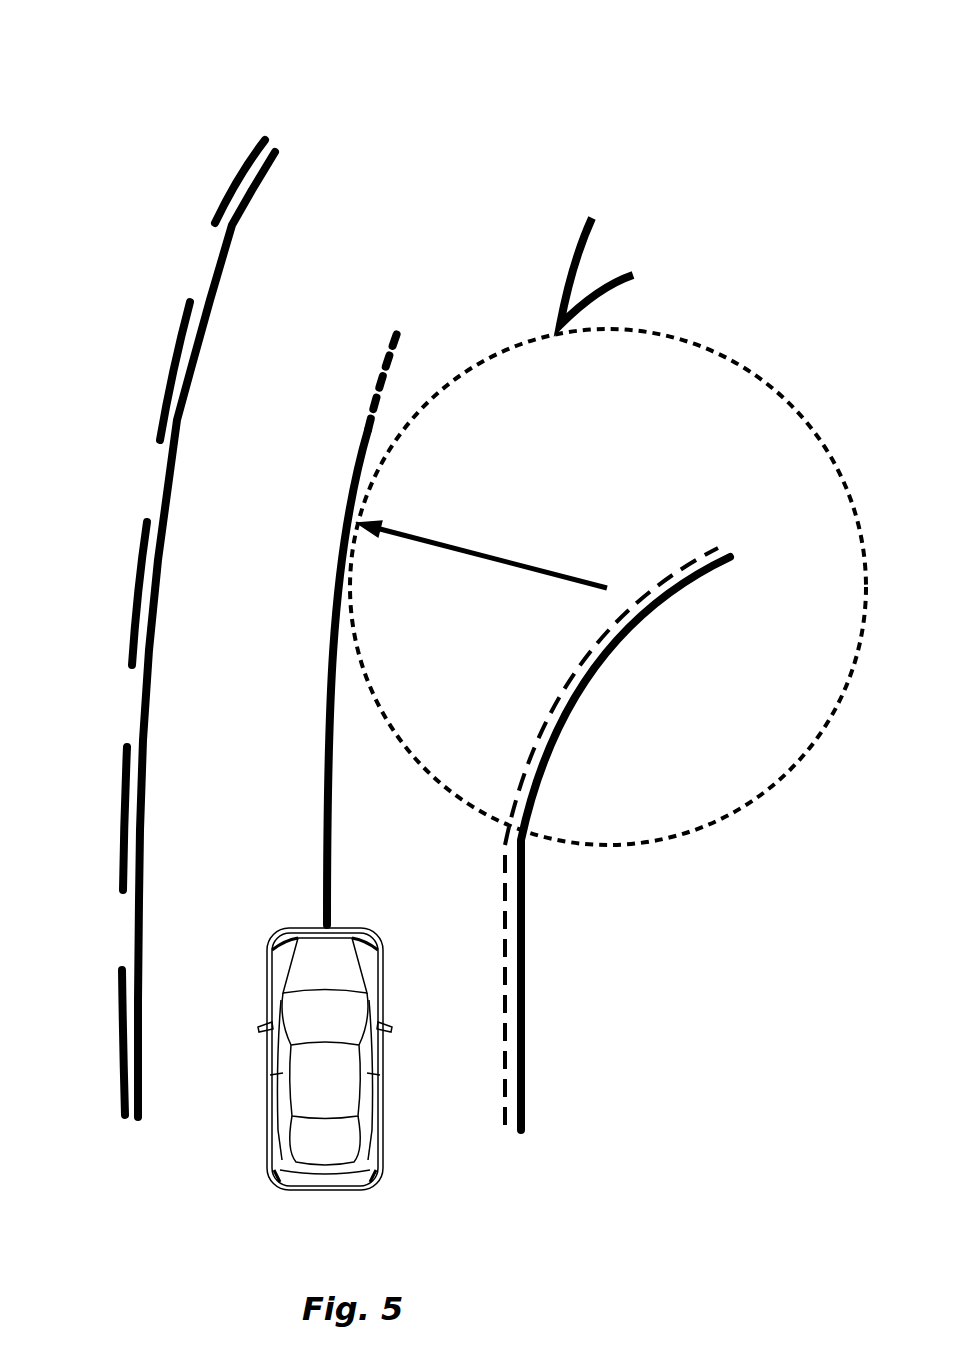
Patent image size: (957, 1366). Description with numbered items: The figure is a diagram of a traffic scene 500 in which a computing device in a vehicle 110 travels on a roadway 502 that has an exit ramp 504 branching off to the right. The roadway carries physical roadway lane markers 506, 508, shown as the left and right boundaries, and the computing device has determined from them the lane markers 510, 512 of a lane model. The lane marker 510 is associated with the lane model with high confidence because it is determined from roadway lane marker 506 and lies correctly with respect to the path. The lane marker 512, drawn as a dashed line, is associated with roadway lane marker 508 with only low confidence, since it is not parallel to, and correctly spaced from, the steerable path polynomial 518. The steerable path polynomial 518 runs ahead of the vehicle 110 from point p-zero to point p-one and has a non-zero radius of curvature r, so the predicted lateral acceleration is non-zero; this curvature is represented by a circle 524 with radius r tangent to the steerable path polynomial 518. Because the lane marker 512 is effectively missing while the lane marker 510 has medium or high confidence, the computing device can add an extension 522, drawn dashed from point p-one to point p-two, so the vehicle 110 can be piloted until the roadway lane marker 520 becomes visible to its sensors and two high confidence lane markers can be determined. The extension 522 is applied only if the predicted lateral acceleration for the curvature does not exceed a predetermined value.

The traffic scene 500 is at (389, 22).
The roadway 502 is at (228, 1092).
The exit ramp 504 is at (573, 672).
The roadway lane marker 506 is at (120, 848).
The roadway lane marker 508 is at (527, 898).
The lane marker 510 is at (145, 790).
The lane marker 512 is at (503, 928).
The steerable path polynomial 518 is at (333, 778).
The roadway lane marker 520 is at (572, 248).
The extension 522 is at (388, 350).
The circle 524 is at (355, 633).
The vehicle 110 is at (378, 1078).